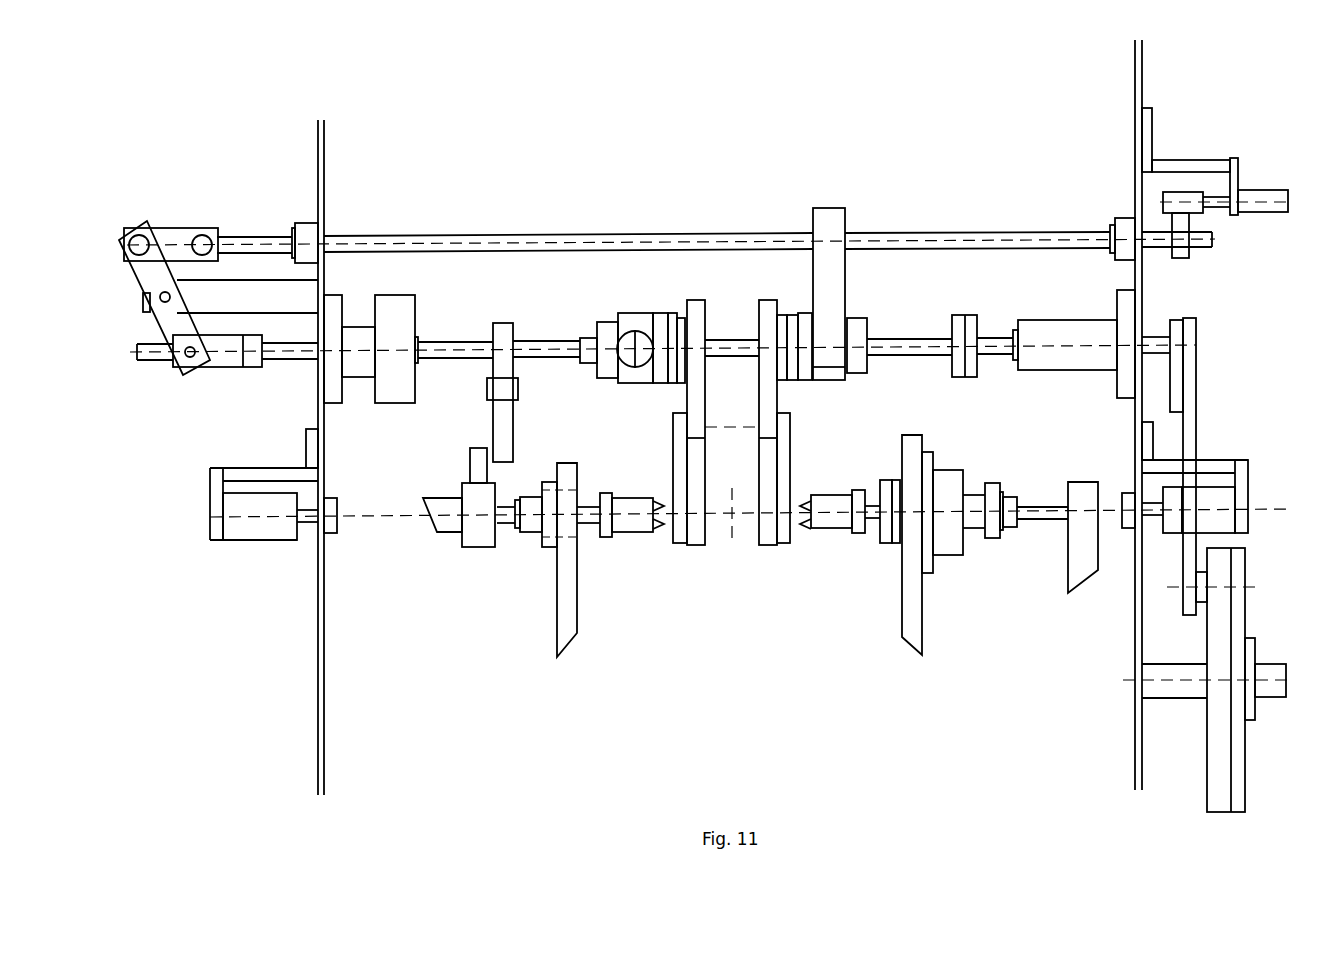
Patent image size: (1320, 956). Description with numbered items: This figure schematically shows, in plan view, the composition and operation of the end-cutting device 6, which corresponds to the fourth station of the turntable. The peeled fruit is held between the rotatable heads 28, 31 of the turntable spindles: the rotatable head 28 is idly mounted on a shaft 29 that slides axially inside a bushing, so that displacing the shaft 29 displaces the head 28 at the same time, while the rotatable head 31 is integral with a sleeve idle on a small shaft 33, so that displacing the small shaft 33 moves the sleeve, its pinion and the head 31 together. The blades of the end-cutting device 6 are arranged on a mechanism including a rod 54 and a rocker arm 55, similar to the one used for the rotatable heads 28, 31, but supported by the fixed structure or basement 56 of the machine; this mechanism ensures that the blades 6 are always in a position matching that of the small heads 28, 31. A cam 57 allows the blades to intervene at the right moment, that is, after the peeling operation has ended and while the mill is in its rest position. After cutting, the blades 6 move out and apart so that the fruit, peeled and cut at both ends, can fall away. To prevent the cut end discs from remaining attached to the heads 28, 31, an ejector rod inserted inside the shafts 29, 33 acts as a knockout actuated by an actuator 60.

The end-cutting device 6 is at (705, 545).
The rotatable head 28 is at (637, 533).
The shaft 29 is at (585, 523).
The rotatable head 31 is at (840, 530).
The small shaft 33 is at (1040, 523).
The rod 54 is at (238, 233).
The rocker arm 55 is at (158, 237).
The fixed structure or basement 56 is at (316, 190).
The cam 57 is at (1203, 737).
The actuator 60 is at (272, 542).